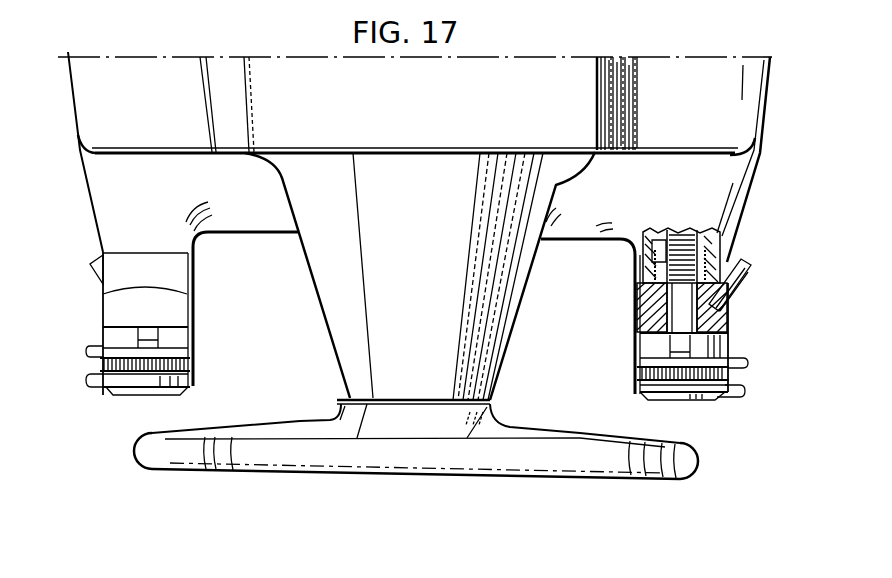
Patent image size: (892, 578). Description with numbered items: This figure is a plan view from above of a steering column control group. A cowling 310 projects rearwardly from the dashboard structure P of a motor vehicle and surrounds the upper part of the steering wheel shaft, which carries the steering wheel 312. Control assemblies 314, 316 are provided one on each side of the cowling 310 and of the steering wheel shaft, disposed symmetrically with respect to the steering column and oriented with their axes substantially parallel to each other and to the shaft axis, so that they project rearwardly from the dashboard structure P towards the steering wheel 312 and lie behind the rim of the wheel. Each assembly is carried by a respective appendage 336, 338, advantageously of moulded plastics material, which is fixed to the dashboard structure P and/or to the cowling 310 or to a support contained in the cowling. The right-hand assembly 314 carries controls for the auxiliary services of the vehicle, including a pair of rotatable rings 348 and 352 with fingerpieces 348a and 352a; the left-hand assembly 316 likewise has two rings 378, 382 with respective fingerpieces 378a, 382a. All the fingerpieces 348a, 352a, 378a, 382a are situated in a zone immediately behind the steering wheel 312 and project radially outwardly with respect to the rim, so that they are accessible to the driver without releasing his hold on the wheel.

The cowling 310 is at (383, 311).
The steering wheel 312 is at (560, 460).
The right-hand control assembly 314 is at (736, 330).
The left-hand control assembly 316 is at (98, 312).
The appendage 336 is at (653, 187).
The appendage 338 is at (157, 213).
The rotatable ring 348 is at (650, 345).
The fingerpiece 348a is at (750, 368).
The rotatable ring 352 is at (653, 385).
The fingerpiece 352a is at (728, 390).
The ring 378 is at (175, 338).
The fingerpiece 378a is at (85, 357).
The ring 382 is at (190, 381).
The fingerpiece 382a is at (98, 387).
The dashboard structure P is at (715, 93).